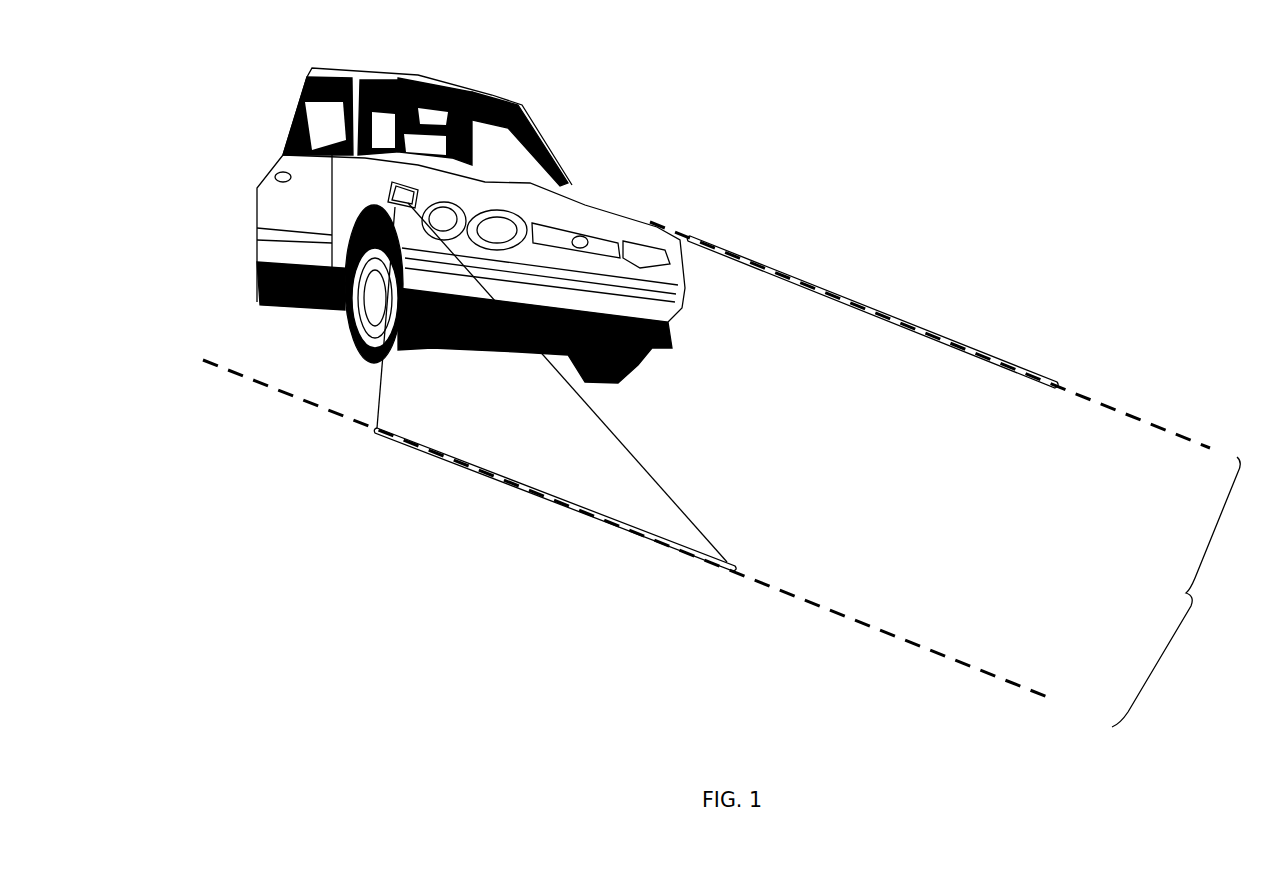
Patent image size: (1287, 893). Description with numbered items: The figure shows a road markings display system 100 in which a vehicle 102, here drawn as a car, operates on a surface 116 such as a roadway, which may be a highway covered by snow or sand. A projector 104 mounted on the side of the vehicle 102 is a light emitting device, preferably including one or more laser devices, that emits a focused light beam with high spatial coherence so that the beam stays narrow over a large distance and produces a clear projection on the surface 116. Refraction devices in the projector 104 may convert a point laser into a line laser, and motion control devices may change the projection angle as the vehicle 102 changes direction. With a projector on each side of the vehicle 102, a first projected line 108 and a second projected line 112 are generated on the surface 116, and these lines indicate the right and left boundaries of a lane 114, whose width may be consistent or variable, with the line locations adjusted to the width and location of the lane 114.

The road markings display system 100 is at (1194, 55).
The vehicle 102 is at (508, 100).
The projector 104 is at (378, 198).
The first projected line 108 is at (585, 522).
The second projected line 112 is at (877, 295).
The lane 114 is at (1176, 592).
The surface 116 is at (905, 482).